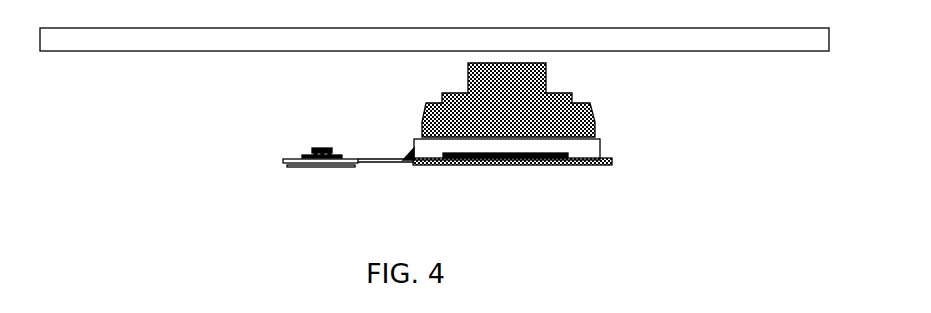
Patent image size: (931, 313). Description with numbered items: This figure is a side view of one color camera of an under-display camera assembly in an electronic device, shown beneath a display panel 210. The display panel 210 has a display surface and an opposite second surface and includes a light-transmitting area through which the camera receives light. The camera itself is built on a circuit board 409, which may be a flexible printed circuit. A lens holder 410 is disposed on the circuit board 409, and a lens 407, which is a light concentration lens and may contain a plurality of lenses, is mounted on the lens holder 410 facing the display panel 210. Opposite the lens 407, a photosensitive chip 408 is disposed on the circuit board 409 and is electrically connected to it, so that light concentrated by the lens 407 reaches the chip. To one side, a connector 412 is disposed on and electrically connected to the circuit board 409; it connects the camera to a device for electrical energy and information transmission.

The display panel 210 is at (703, 41).
The lens 407 is at (442, 98).
The photosensitive chip 408 is at (437, 150).
The circuit board 409 is at (403, 163).
The lens holder 410 is at (585, 145).
The connector 412 is at (303, 152).